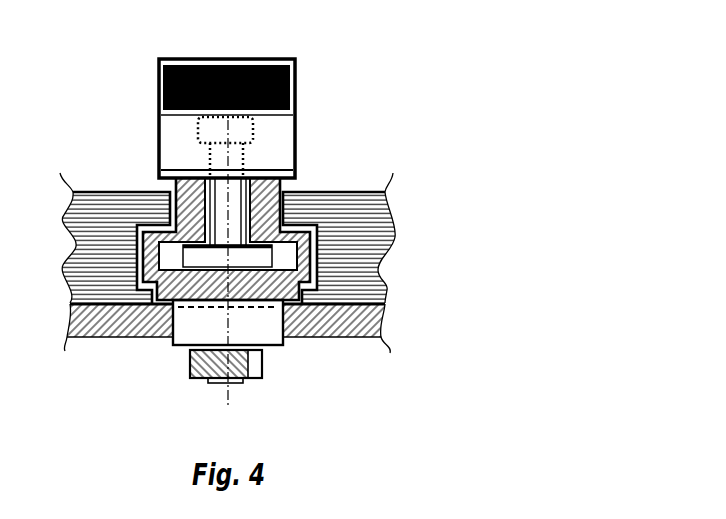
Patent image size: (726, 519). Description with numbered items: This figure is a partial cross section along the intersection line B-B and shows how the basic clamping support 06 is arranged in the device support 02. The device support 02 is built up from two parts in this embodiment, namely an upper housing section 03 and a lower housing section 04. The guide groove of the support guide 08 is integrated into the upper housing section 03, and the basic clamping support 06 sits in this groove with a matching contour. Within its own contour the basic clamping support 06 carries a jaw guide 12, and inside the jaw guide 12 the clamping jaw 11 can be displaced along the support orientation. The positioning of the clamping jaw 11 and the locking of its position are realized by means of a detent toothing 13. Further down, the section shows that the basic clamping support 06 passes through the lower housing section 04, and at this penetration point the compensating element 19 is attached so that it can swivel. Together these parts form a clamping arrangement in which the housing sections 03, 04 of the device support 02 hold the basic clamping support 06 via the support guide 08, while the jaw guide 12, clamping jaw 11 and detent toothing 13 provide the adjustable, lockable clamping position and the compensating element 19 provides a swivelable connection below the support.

The device support 02 is at (326, 263).
The upper housing section 03 is at (355, 242).
The lower housing section 04 is at (370, 325).
The basic clamping support 06 is at (175, 185).
The support guide 08 is at (290, 206).
The clamping jaw 11 is at (290, 86).
The jaw guide 12 is at (250, 170).
The detent toothing 13 is at (180, 168).
The compensating element 19 is at (190, 365).